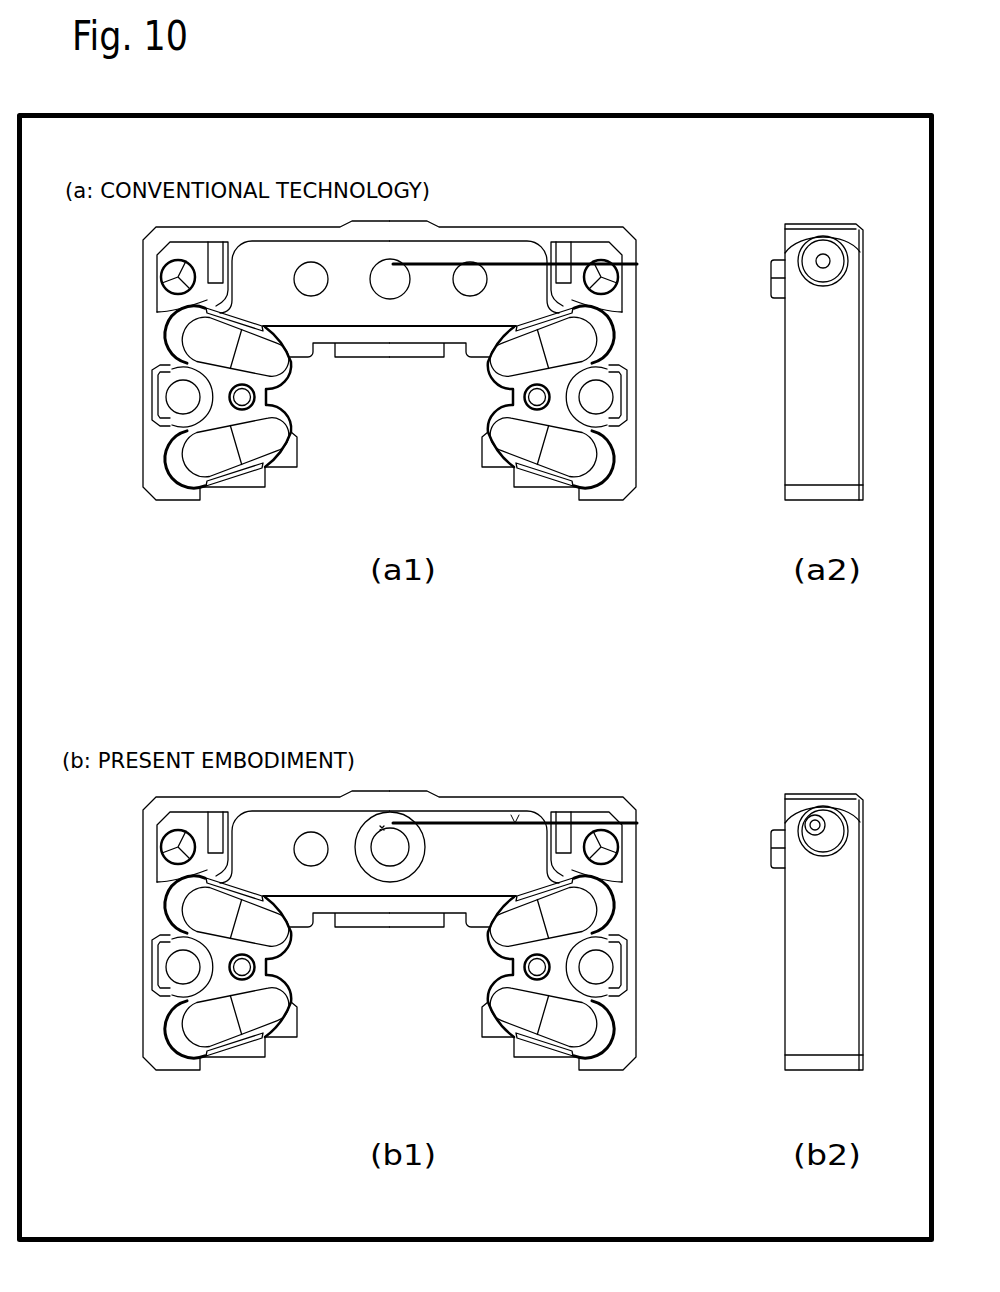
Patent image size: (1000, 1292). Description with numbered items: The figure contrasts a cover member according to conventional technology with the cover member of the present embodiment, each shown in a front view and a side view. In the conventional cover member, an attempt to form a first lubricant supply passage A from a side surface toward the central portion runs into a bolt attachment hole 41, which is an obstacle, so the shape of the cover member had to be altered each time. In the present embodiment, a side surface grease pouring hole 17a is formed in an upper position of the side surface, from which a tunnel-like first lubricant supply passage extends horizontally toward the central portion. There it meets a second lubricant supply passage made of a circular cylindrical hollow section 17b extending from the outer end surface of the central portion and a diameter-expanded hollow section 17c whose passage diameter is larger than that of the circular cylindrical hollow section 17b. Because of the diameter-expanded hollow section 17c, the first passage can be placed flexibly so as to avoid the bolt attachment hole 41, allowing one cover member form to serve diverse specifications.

The bolt attachment hole 41 is at (471, 282).
The first lubricant supply passage A is at (512, 262).
The side surface grease pouring hole 17a is at (818, 818).
The circular cylindrical hollow section 17b is at (390, 848).
The diameter-expanded hollow section 17c is at (368, 862).